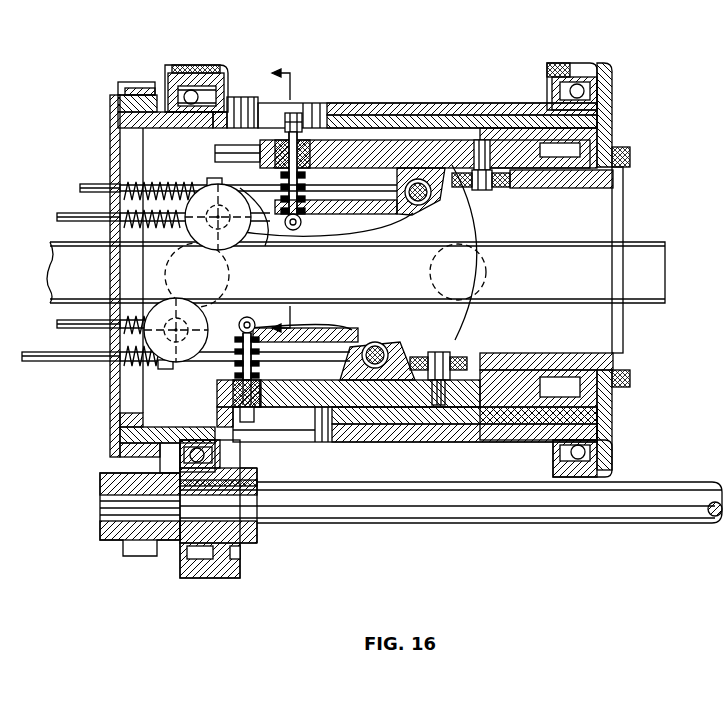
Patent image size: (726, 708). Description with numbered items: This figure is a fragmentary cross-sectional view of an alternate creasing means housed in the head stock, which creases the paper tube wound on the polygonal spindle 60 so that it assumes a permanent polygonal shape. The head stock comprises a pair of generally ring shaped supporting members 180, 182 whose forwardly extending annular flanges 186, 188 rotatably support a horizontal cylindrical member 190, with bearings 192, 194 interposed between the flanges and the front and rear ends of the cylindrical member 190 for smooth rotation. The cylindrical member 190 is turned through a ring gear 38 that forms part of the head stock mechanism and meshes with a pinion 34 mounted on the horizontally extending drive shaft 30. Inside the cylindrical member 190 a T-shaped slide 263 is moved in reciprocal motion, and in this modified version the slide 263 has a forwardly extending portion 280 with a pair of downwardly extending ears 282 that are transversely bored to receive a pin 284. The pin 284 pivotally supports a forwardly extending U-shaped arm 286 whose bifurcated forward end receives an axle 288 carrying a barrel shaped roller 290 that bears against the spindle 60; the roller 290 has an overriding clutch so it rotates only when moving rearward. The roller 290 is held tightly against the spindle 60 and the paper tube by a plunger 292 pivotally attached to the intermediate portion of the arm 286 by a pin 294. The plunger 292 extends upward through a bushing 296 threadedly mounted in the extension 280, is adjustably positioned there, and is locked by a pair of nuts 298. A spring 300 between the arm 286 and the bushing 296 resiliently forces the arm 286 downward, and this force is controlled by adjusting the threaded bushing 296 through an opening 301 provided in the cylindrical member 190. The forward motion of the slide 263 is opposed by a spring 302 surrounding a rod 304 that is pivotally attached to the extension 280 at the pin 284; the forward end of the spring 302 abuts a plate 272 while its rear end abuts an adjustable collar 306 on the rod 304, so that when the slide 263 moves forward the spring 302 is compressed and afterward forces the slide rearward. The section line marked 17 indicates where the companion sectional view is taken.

The annular flange 186 is at (190, 62).
The bearing 192 is at (232, 66).
The ring shaped supporting member 180 is at (240, 74).
The nuts 298 is at (300, 148).
The bushing 296 is at (338, 142).
The cylindrical member 190 is at (410, 103).
The annular flange 188 is at (573, 63).
The bearing 194 is at (600, 64).
The ring gear 38 is at (122, 82).
The ring shaped supporting member 182 is at (608, 115).
The plate 272 is at (112, 127).
The T-shaped slide 263 is at (508, 128).
The forwardly extending portion 280 is at (440, 135).
The opening 301 is at (284, 115).
The section line 17 is at (294, 200).
The spring 302 is at (150, 184).
The rod 304 is at (100, 190).
The adjustable collar 306 is at (208, 180).
The spring 300 is at (290, 180).
The spindle 60 is at (624, 242).
The ears 282 is at (438, 180).
The pin 284 is at (432, 190).
The axle 288 is at (166, 268).
The barrel shaped roller 290 is at (243, 236).
The pin 294 is at (296, 230).
The plunger 292 is at (302, 224).
The U-shaped arm 286 is at (405, 218).
The drive shaft 30 is at (650, 483).
The pinion 34 is at (140, 556).